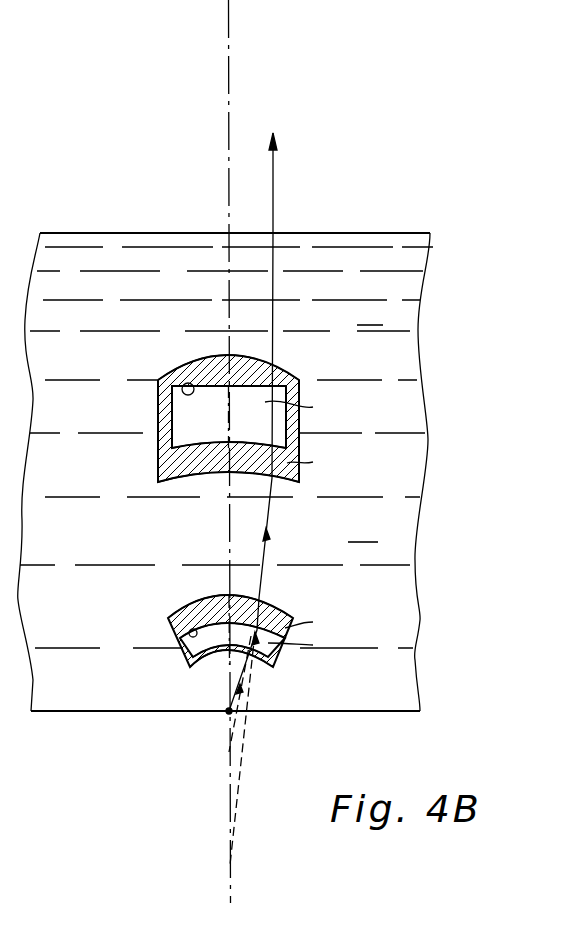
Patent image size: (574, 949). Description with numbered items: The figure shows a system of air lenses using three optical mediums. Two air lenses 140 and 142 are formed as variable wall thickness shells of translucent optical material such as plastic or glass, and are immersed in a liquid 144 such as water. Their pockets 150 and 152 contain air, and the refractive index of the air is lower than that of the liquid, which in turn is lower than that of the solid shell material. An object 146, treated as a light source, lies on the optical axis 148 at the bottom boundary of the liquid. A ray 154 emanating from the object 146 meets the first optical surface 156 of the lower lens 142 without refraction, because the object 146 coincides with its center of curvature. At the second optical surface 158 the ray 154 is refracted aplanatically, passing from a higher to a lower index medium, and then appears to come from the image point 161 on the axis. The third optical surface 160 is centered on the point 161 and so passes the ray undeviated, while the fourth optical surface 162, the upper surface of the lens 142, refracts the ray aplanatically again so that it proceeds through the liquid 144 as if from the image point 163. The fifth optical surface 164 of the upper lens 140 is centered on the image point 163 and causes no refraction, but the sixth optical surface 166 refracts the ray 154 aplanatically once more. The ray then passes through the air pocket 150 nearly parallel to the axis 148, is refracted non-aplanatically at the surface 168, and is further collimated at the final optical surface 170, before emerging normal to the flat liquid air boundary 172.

The air lens 140 is at (158, 416).
The air lens 142 is at (177, 639).
The liquid 144 is at (105, 543).
The object 146 is at (227, 712).
The optical axis 148 is at (228, 33).
The pocket 150 is at (220, 398).
The pocket 152 is at (219, 628).
The ray 154 is at (274, 180).
The first optical surface 156 is at (227, 667).
The second optical surface 158 is at (217, 663).
The third optical surface 160 is at (202, 617).
The image point 161 is at (230, 772).
The fourth optical surface 162 is at (190, 610).
The image point 163 is at (230, 880).
The fifth optical surface 164 is at (215, 477).
The sixth optical surface 166 is at (218, 440).
The optical surface 168 is at (186, 383).
The final optical surface 170 is at (288, 363).
The liquid air boundary 172 is at (135, 232).